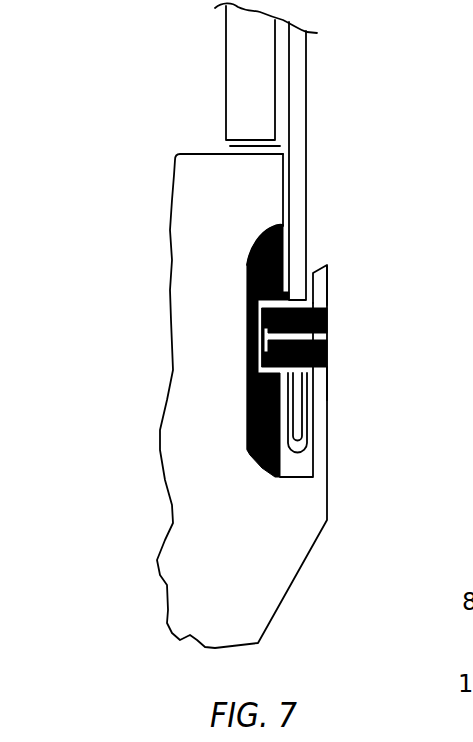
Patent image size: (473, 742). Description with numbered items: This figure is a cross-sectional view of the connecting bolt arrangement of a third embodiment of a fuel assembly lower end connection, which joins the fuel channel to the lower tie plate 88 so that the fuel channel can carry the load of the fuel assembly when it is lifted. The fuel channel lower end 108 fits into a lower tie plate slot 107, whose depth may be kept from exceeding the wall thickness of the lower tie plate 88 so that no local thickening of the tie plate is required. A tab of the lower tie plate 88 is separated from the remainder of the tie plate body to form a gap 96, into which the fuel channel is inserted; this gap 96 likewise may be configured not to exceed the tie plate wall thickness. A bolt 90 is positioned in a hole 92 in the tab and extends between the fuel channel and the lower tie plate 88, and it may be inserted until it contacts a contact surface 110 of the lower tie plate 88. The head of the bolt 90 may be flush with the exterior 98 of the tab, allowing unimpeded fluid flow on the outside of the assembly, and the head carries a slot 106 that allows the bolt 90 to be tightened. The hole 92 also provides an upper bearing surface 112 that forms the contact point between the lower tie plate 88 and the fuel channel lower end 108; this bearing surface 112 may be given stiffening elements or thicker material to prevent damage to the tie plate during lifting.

The lower tie plate 88 is at (183, 321).
The bolt 90 is at (328, 357).
The hole 92 is at (328, 342).
The gap 96 is at (302, 404).
The exterior of the tab 98 is at (328, 379).
The slot 106 is at (327, 332).
The lower tie plate slot 107 is at (327, 266).
The fuel channel lower end 108 is at (307, 175).
The contact surface 110 is at (247, 345).
The upper bearing surface 112 is at (247, 270).